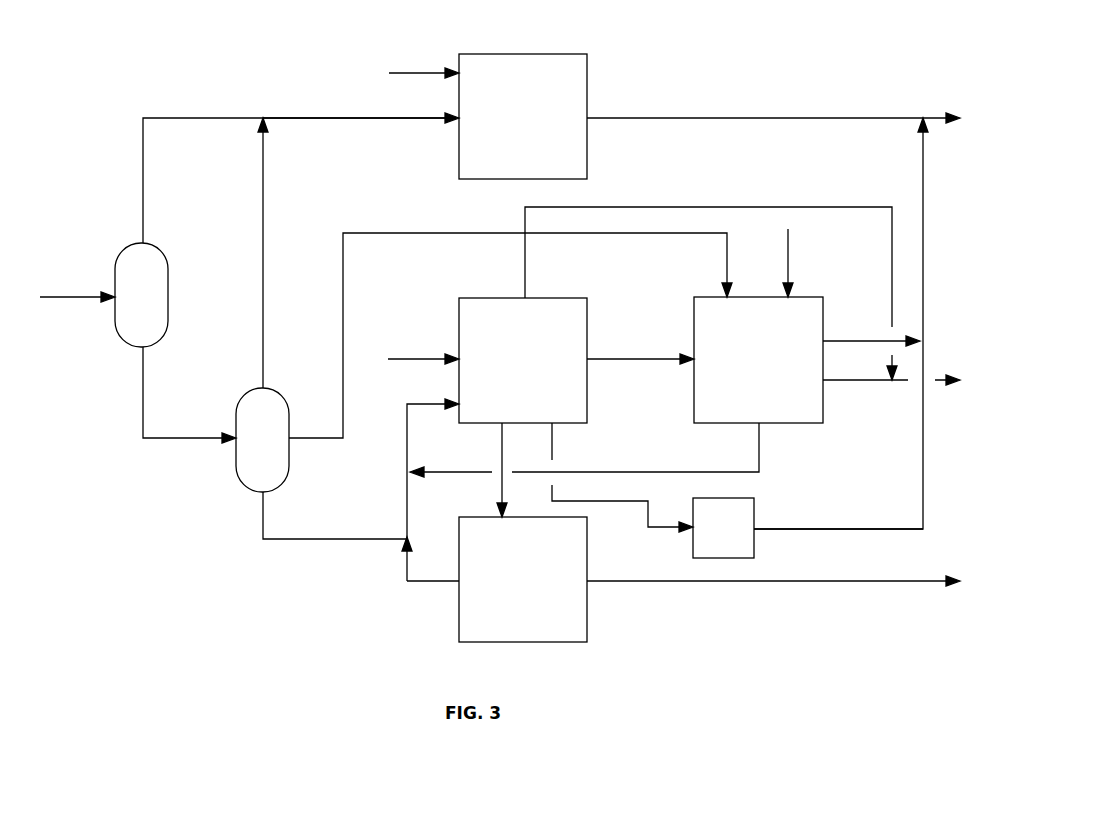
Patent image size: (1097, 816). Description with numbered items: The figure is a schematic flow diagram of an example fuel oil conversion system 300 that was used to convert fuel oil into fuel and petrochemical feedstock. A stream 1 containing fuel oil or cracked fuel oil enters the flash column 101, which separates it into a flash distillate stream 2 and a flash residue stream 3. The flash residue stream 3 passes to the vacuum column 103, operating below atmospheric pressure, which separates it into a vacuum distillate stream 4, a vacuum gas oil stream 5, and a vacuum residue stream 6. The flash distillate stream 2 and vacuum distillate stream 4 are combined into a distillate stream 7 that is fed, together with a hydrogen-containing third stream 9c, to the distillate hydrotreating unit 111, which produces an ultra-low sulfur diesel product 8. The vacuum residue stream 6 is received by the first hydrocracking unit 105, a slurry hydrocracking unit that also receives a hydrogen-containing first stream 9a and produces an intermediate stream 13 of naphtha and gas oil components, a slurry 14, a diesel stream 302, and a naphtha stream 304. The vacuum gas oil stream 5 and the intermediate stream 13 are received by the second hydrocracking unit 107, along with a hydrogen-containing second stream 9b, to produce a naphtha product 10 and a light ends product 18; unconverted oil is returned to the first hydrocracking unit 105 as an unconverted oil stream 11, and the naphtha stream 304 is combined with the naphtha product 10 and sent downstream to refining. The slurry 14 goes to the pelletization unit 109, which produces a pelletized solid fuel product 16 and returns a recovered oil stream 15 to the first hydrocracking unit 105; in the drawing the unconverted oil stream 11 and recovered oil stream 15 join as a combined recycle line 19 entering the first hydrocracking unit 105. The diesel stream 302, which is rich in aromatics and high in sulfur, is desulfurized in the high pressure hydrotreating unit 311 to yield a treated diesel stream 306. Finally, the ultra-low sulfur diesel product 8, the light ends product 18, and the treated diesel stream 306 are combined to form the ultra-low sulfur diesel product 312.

The stream 1 is at (78, 298).
The flash distillate stream 2 is at (208, 119).
The flash residue stream 3 is at (188, 440).
The vacuum distillate stream 4 is at (261, 352).
The vacuum gas oil stream 5 is at (342, 352).
The vacuum residue stream 6 is at (262, 523).
The distillate stream 7 is at (356, 119).
The ultra-low sulfur diesel product 8 is at (701, 119).
The first stream 9a is at (423, 358).
The second stream 9b is at (789, 244).
The third stream 9c is at (413, 72).
The naphtha product 10 is at (860, 383).
The unconverted oil stream 11 is at (637, 470).
The intermediate stream 13 is at (638, 358).
The slurry 14 is at (500, 455).
The recovered oil stream 15 is at (428, 578).
The pelletized product 16 is at (753, 583).
The light ends product 18 is at (845, 340).
The combined recycle stream to unit 105 19 is at (417, 466).
The flash column 101 is at (141, 295).
The vacuum column 103 is at (262, 440).
The first hydrocracking unit 105 is at (523, 360).
The second hydrocracking unit 107 is at (758, 360).
The pelletization unit 109 is at (523, 579).
The distillate hydrotreating unit 111 is at (523, 116).
The system 300 is at (856, 658).
The diesel stream 302 is at (626, 503).
The naphtha stream 304 is at (527, 258).
The treated diesel stream 306 is at (800, 528).
The high pressure hydrotreating unit 311 is at (723, 528).
The ultra-low sulfur diesel product 312 is at (934, 120).